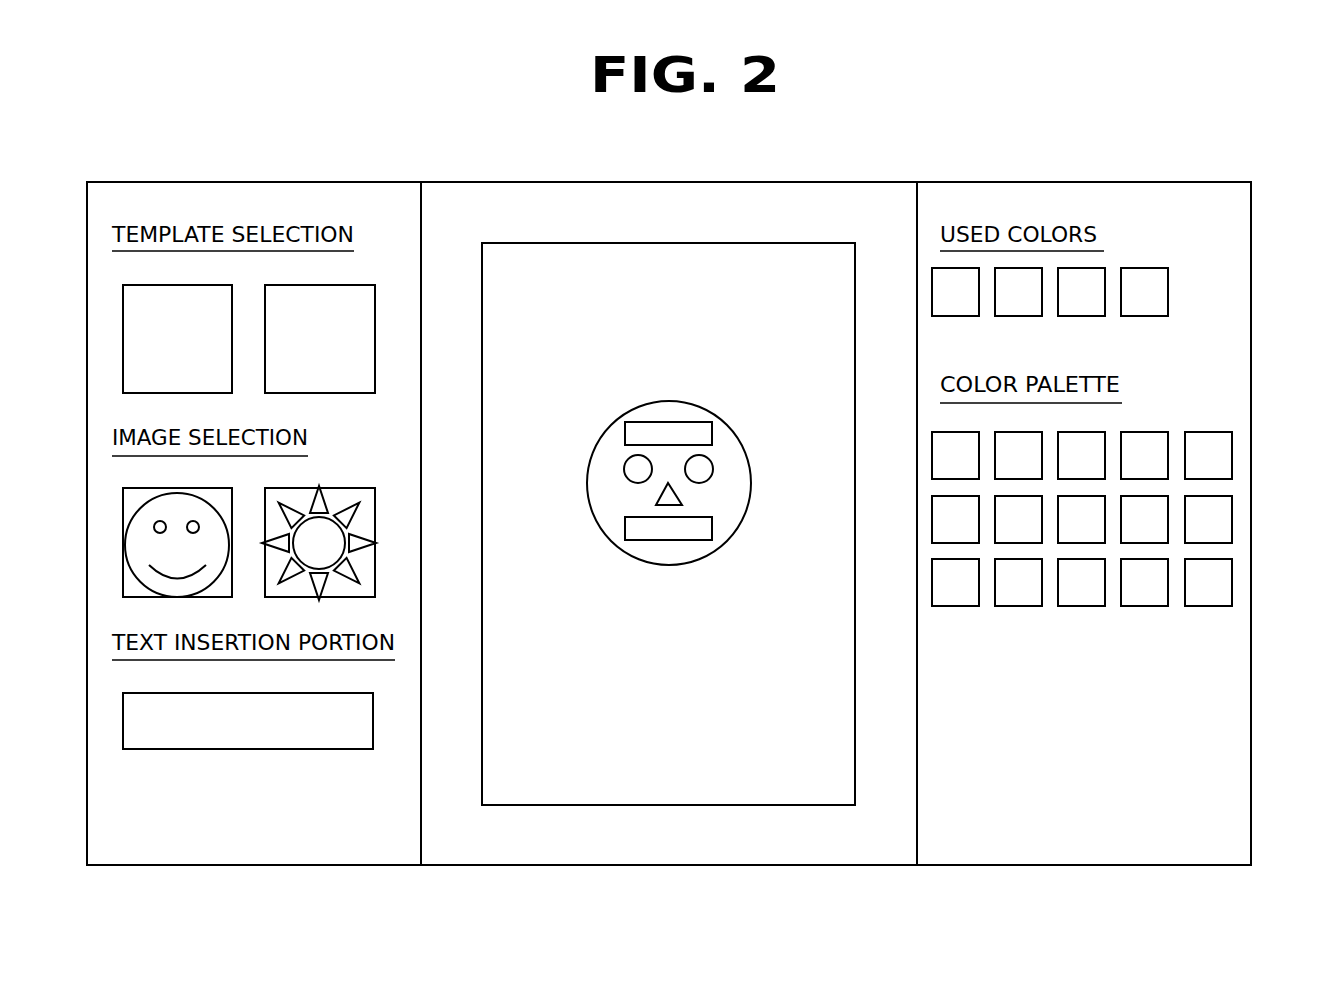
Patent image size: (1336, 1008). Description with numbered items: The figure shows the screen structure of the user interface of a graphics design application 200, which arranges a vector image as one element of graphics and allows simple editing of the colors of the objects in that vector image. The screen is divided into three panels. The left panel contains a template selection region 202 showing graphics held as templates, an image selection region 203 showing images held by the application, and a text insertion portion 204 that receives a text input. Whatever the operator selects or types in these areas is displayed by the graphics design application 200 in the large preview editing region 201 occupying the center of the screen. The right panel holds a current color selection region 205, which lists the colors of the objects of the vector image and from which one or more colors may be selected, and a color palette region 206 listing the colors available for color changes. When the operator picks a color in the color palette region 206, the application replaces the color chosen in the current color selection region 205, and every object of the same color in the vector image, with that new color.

The graphics design application 200 is at (243, 182).
The preview editing region 201 is at (666, 243).
The template selection region 202 is at (123, 336).
The image selection region 203 is at (123, 540).
The text insertion portion 204 is at (123, 718).
The current color selection region 205 is at (1180, 292).
The color palette region 206 is at (1198, 423).